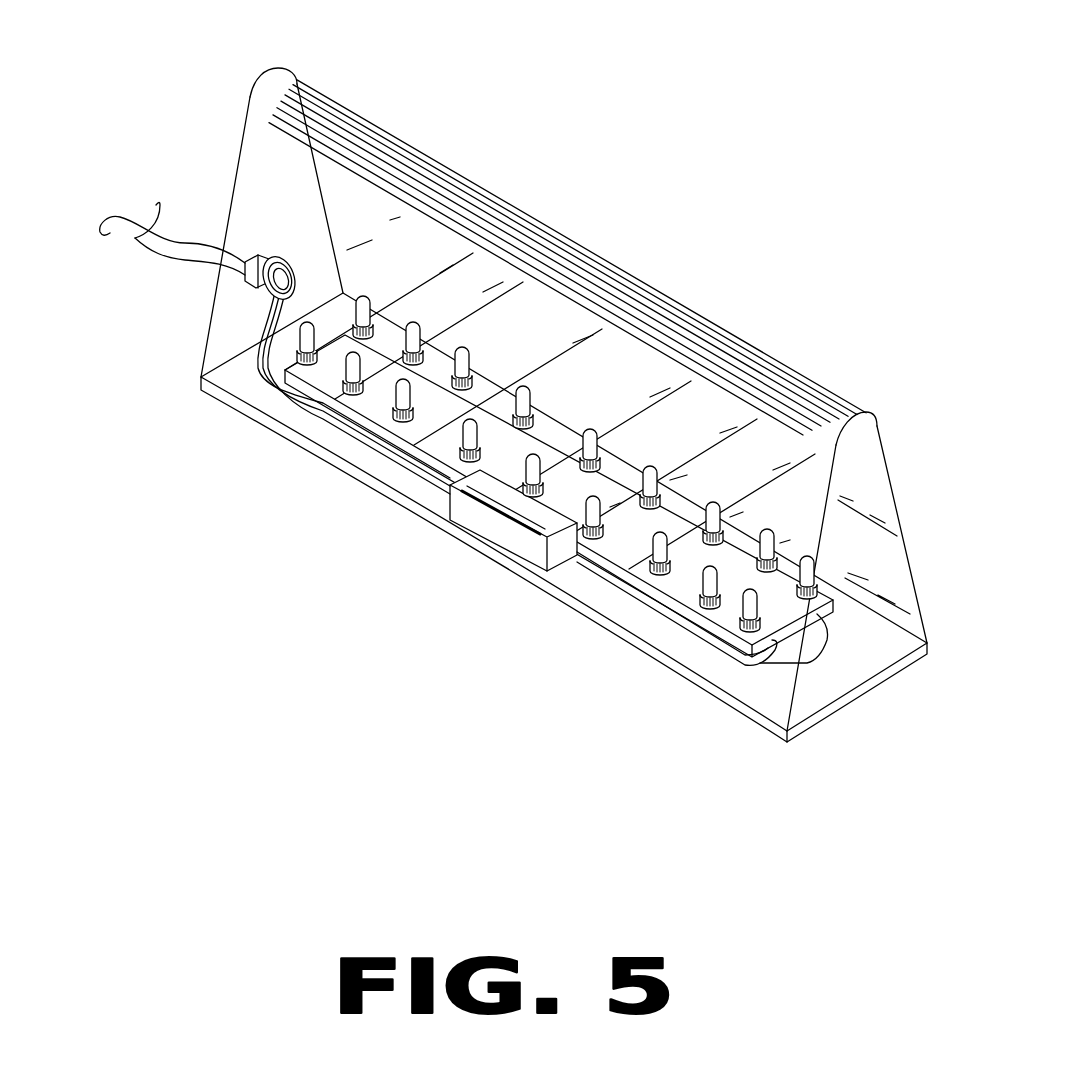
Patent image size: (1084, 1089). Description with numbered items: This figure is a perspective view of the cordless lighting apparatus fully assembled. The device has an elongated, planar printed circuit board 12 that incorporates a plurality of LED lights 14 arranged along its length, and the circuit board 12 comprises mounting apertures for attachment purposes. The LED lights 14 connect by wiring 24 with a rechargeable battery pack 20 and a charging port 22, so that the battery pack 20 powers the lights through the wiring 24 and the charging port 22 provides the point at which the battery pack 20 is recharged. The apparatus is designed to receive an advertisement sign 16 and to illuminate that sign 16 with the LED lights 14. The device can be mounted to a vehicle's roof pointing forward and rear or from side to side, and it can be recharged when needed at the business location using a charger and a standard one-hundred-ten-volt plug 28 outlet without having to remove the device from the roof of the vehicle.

The printed circuit board 12 is at (320, 402).
The LED lights 14 is at (450, 522).
The advertisement sign 16 is at (501, 205).
The rechargeable battery pack 20 is at (507, 538).
The charging port 22 is at (287, 258).
The wiring 24 is at (813, 560).
The standard 110V plug 28 is at (153, 250).